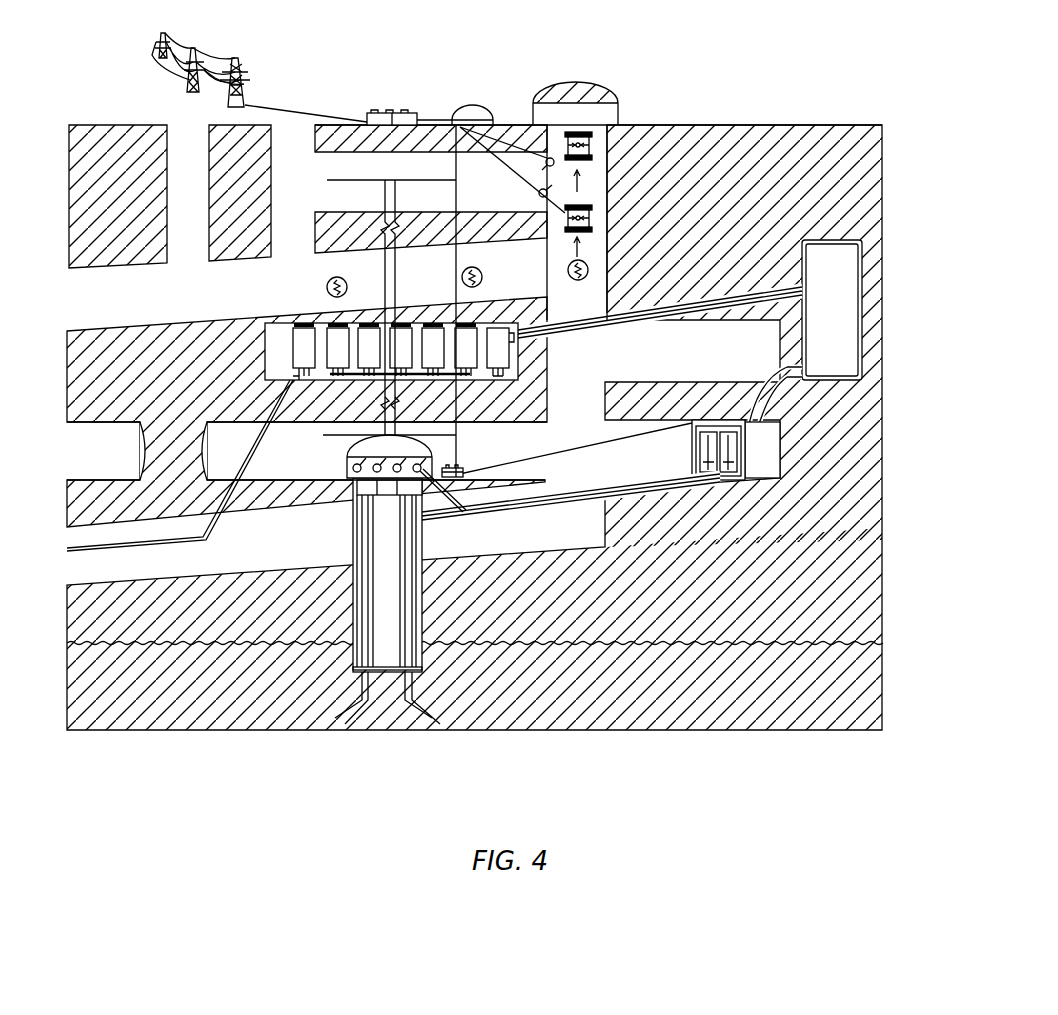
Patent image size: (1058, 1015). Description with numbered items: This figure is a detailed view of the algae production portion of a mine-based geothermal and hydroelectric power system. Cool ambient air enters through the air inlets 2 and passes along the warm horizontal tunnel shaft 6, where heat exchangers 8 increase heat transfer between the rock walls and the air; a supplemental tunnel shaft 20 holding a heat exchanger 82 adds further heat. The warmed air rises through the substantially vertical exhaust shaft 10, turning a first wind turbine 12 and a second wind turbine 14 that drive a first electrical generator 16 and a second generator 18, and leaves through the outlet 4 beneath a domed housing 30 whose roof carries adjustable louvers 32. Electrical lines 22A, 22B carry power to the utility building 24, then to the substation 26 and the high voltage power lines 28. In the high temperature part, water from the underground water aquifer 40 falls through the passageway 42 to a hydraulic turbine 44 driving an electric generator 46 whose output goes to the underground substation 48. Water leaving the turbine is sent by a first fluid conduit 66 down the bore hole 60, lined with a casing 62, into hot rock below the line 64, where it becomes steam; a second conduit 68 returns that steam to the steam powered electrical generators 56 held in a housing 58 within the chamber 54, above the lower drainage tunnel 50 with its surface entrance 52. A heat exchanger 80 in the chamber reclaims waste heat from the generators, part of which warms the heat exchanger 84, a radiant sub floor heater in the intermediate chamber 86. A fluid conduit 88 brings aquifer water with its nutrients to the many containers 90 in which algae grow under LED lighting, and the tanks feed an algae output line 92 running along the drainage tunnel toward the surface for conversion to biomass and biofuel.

The air inlets 2 is at (193, 205).
The outlet 4 is at (590, 124).
The tunnel shaft 6 is at (272, 298).
The heat exchangers 8 is at (345, 281).
The exhaust shaft 10 is at (597, 178).
The first wind turbine 12 is at (592, 219).
The second wind turbine 14 is at (592, 146).
The first electrical generator 16 is at (539, 193).
The second generator 18 is at (549, 158).
The supplemental tunnel shaft 20 is at (387, 167).
The electrical line 22A is at (545, 158).
The electrical line 22B is at (518, 149).
The utility building 24 is at (472, 103).
The substation 26 is at (378, 113).
The high voltage power lines 28 is at (240, 72).
The domed housing 30 is at (562, 82).
The adjustable louvers 32 is at (575, 92).
The underground water aquifer 40 is at (862, 328).
The passageway 42 is at (768, 398).
The hydraulic turbine 44 is at (748, 466).
The electric generator 46 is at (725, 420).
The underground substation 48 is at (461, 467).
The lower drainage tunnel 50 is at (329, 548).
The surface entrance 52 is at (56, 556).
The tunnel or chamber 54 is at (275, 470).
The steam powered electrical generators 56 is at (404, 466).
The housing 58 is at (353, 454).
The bore hole 60 is at (412, 605).
The casing 62 is at (422, 585).
The line 64 is at (605, 637).
The first fluid conduit 66 is at (533, 508).
The second conduit 68 is at (357, 623).
The heat exchanger 80 is at (323, 435).
The heat exchanger 82 is at (327, 180).
The heat exchanger 84 is at (353, 377).
The intermediate chamber 86 is at (290, 355).
The fluid conduit 88 is at (687, 323).
The containers 90 is at (498, 350).
The algae output line 92 is at (252, 453).